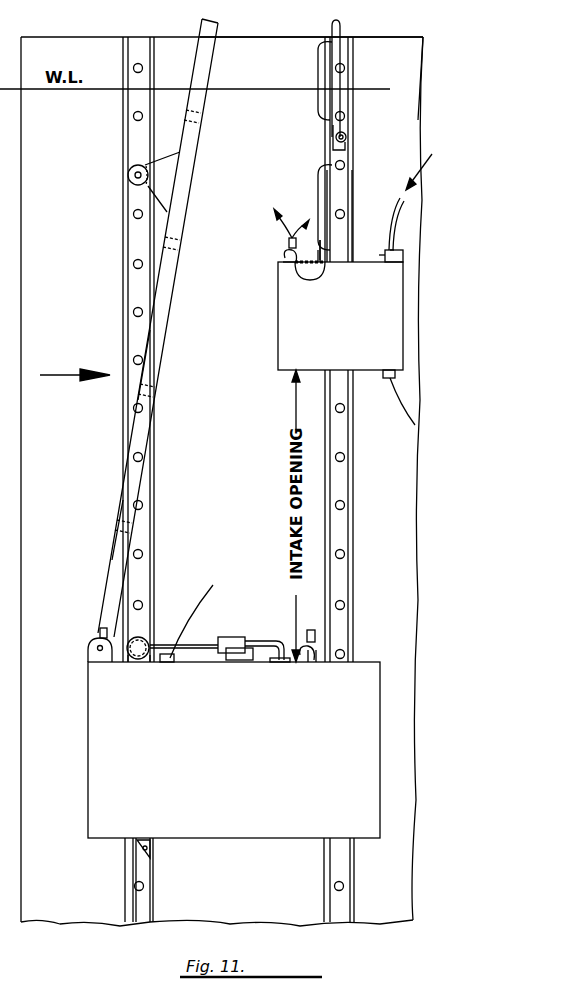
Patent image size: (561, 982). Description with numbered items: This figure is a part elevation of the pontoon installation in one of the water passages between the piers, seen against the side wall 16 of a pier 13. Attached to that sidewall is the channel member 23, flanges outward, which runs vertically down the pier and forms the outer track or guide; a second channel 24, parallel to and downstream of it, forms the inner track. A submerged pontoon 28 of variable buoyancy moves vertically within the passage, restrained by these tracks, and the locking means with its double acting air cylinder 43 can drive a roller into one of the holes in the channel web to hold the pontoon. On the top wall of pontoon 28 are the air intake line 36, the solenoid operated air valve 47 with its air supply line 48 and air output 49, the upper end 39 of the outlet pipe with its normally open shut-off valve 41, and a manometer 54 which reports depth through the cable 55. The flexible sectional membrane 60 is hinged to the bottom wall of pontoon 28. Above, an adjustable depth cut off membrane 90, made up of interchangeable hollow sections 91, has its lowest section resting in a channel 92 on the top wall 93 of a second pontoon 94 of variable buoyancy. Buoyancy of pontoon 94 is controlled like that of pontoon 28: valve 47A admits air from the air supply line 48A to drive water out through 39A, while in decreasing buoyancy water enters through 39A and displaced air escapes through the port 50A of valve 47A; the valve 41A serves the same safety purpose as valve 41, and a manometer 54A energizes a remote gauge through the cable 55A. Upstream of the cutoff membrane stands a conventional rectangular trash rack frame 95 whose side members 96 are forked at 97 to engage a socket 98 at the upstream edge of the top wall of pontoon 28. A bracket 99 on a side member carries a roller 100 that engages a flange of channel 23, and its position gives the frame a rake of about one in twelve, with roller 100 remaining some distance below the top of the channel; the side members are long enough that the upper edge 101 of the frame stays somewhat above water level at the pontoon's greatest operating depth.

The pier 13 is at (388, 36).
The pier side wall 16 is at (412, 88).
The channel member 23 is at (123, 262).
The channel 24 is at (354, 515).
The submerged pontoon 28 is at (88, 745).
The air intake line 36 is at (270, 662).
The upper end of outlet pipe 39 is at (318, 640).
The outlet of pontoon 94 39A is at (288, 243).
The shut-off valve 41 is at (318, 662).
The valve of pontoon 94 41A is at (288, 256).
The double acting air cylinder 43 is at (134, 664).
The solenoid operated air valve 47 is at (228, 637).
The valve of pontoon 94 47A is at (365, 258).
The air supply line 48 is at (232, 662).
The air supply line of pontoon 94 48A is at (393, 200).
The air output 49 is at (258, 640).
The port of valve 47A 50A is at (385, 268).
The manometer 54 is at (170, 664).
The manometer of pontoon 94 54A is at (383, 370).
The cable 55 is at (213, 590).
The cable of pontoon 94 55A is at (396, 412).
The flexible sectional membrane 60 is at (123, 905).
The adjustable depth cut off membrane 90 is at (346, 118).
The hollow section 91 is at (322, 70).
The channel 92 is at (333, 266).
The top wall of pontoon 94 93 is at (398, 258).
The pontoon of variable buoyancy 94 is at (278, 345).
The trash rack frame 95 is at (120, 510).
The side member 96 is at (114, 566).
The fork 97 is at (100, 632).
The socket 98 is at (90, 650).
The bracket 99 is at (138, 186).
The roller 100 is at (130, 160).
The upper edge of frame 101 is at (218, 22).